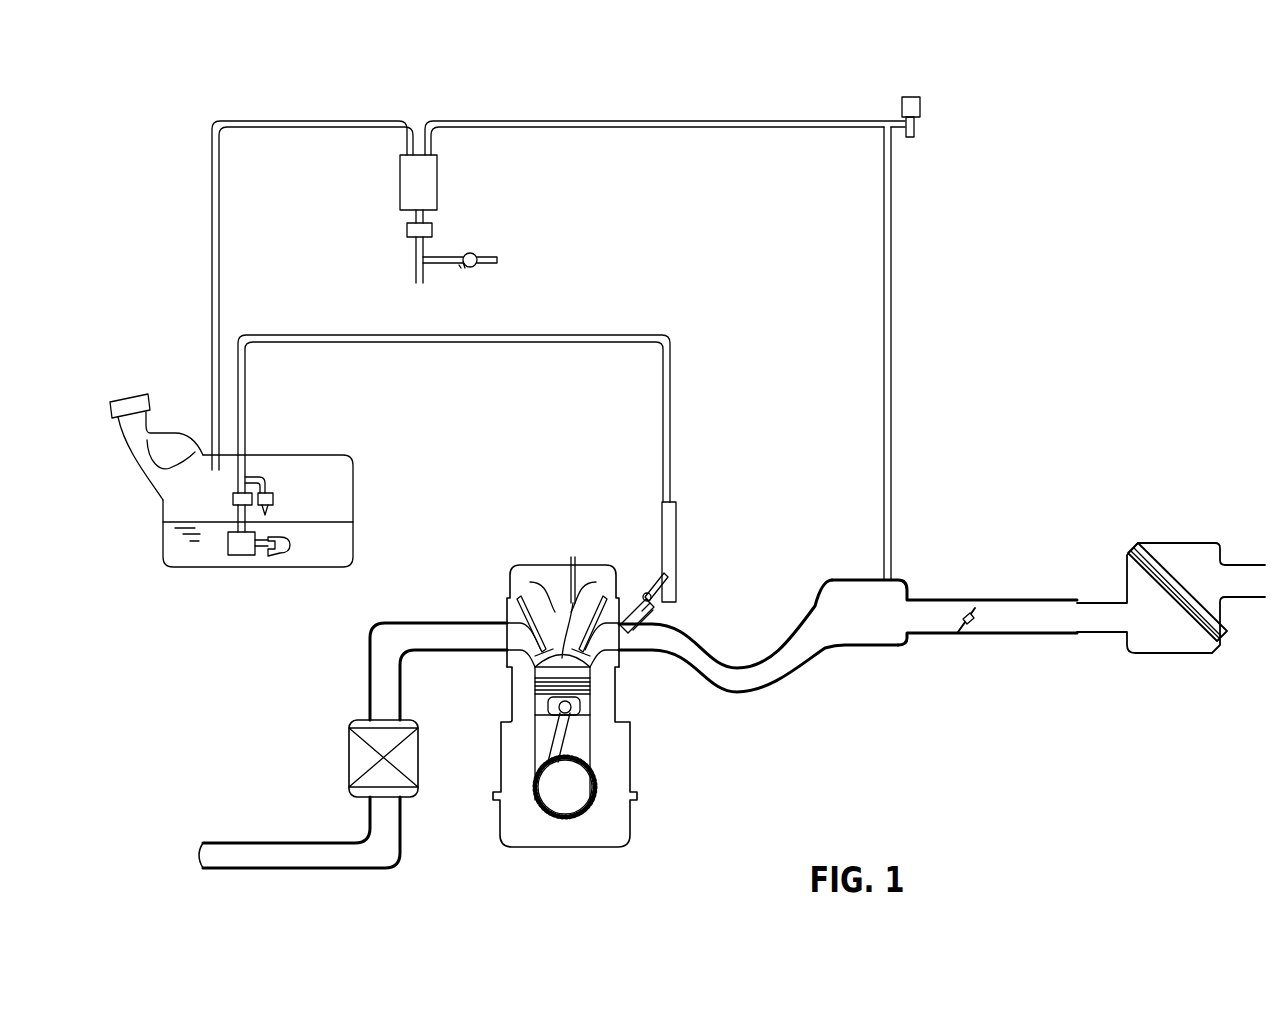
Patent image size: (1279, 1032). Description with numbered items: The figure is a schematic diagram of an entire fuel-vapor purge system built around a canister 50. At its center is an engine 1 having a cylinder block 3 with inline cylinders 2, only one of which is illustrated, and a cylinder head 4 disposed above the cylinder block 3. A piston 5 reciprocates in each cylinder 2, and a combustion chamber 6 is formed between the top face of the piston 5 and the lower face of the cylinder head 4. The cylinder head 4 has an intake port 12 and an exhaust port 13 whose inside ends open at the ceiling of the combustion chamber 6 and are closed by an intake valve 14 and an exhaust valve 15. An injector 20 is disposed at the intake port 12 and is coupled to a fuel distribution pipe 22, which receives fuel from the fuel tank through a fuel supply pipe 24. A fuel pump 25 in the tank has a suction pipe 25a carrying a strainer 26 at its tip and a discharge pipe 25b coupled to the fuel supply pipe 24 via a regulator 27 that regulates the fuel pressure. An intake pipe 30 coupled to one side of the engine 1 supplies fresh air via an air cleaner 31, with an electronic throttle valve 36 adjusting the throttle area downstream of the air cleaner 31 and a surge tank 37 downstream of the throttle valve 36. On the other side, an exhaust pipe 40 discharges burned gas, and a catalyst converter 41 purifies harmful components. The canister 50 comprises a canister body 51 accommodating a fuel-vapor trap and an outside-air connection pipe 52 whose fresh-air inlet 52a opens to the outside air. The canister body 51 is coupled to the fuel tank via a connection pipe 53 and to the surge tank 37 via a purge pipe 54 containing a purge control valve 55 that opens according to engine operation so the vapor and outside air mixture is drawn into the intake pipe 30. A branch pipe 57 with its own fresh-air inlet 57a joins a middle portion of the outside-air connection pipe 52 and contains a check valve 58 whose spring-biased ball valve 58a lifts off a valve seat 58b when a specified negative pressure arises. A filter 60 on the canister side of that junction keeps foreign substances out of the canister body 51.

The engine 1 is at (562, 665).
The cylinder 2 is at (585, 755).
The cylinder block 3 is at (630, 716).
The cylinder head 4 is at (507, 610).
The piston 5 is at (535, 707).
The combustion chamber 6 is at (565, 546).
The intake port 12 is at (612, 652).
The exhaust port 13 is at (507, 645).
The intake valve 14 is at (606, 596).
The exhaust valve 15 is at (519, 595).
The injector 20 is at (648, 605).
The fuel distribution pipe 22 is at (677, 540).
The fuel supply pipe 24 is at (444, 342).
The fuel pump 25 is at (240, 557).
The suction pipe 25a is at (262, 558).
The discharge pipe 25b is at (237, 513).
The strainer 26 is at (285, 555).
The regulator 27 is at (233, 497).
The intake pipe 30 is at (749, 668).
The air cleaner 31 is at (1176, 562).
The electronic throttle valve 36 is at (973, 614).
The surge tank 37 is at (850, 585).
The exhaust pipe 40 is at (414, 623).
The catalyst converter 41 is at (349, 758).
The canister 50 is at (351, 187).
The canister body 51 is at (400, 176).
The outside-air connection pipe 52 is at (415, 217).
The fresh-air inlet 52a is at (420, 280).
The connection pipe 53 is at (311, 121).
The purge pipe 54 is at (634, 121).
The purge control valve 55 is at (910, 97).
The branch pipe 57 is at (455, 255).
The fresh-air inlet 57a is at (486, 257).
The check valve 58 is at (547, 296).
The ball valve 58a is at (461, 270).
The valve seat 58b is at (467, 268).
The filter 60 is at (407, 231).